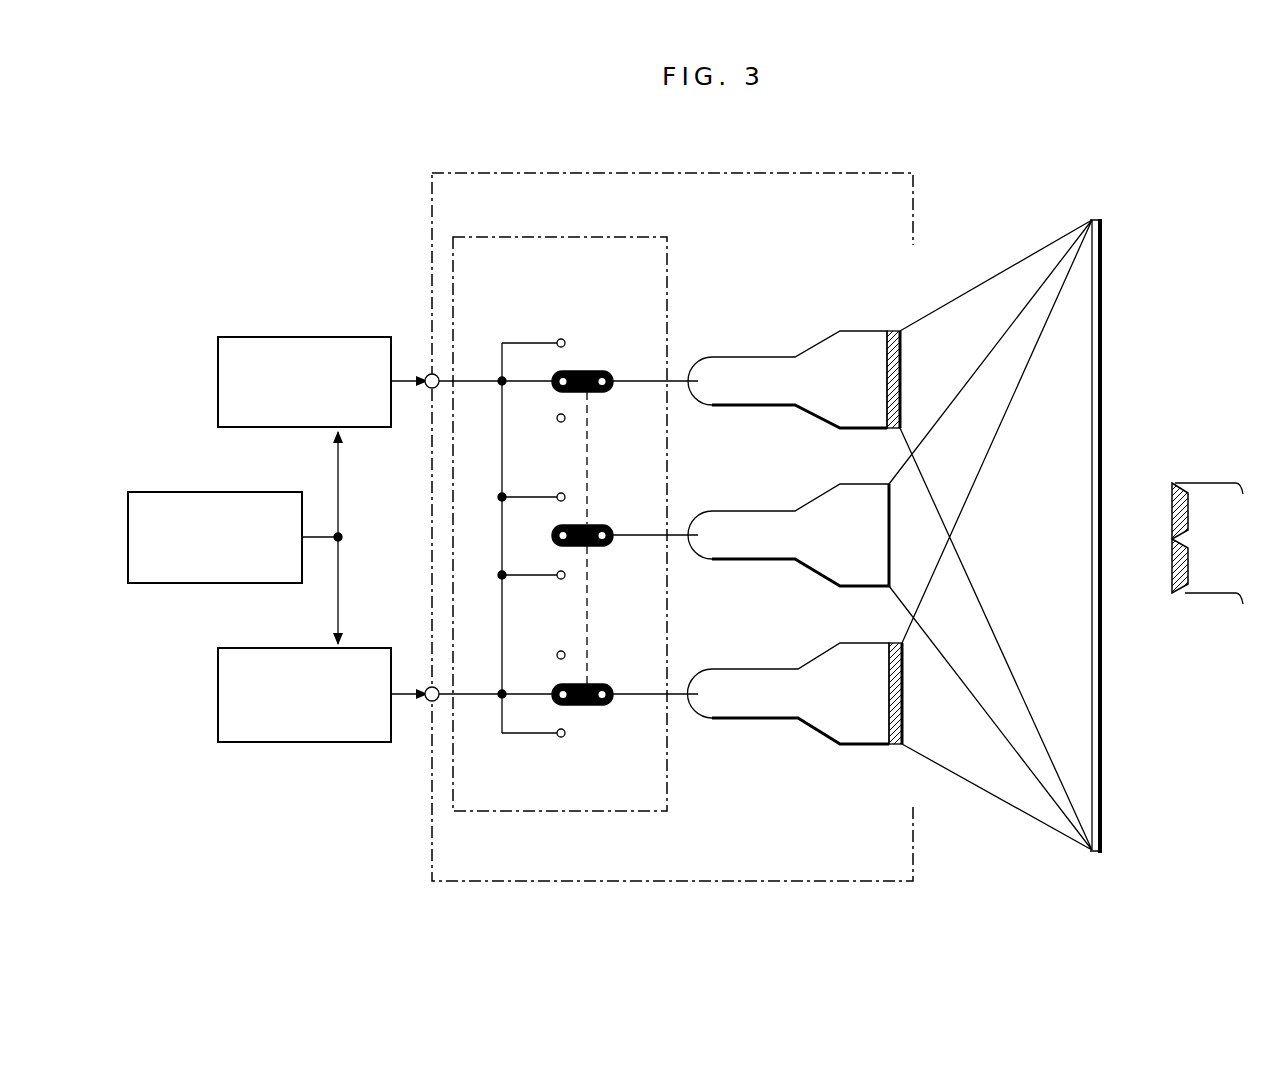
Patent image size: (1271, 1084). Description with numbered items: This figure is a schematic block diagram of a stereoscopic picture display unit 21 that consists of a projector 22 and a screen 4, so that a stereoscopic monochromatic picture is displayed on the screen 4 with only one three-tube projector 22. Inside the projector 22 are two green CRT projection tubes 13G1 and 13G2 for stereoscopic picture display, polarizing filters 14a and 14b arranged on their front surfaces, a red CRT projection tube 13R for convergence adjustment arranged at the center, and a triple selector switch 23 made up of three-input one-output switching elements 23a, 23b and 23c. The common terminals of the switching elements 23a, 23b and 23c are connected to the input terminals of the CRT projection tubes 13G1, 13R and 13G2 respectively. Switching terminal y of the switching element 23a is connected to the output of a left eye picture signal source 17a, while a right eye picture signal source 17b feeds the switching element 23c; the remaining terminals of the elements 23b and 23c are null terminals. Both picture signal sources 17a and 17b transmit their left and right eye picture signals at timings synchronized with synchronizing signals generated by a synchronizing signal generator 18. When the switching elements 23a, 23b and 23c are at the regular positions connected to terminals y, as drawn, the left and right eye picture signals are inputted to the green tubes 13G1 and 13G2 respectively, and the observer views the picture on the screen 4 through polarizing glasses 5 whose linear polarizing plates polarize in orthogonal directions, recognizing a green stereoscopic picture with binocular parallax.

The stereoscopic picture display unit 21 is at (958, 200).
The projector 22 is at (570, 172).
The triple selector switch 23 is at (668, 262).
The switching element 23a is at (603, 683).
The switching element 23b is at (603, 524).
The switching element 23c is at (593, 369).
The left eye picture signal source 17a is at (262, 648).
The right eye picture signal source 17b is at (272, 337).
The synchronizing signal generator 18 is at (170, 492).
The green CRT projection tube 13G1 is at (817, 665).
The green CRT projection tube 13G2 is at (808, 353).
The red CRT projection tube 13R is at (810, 513).
The polarizing filter 14a is at (902, 695).
The polarizing filter 14b is at (902, 363).
The screen 4 is at (1104, 806).
The polarizing glasses 5 is at (1188, 598).